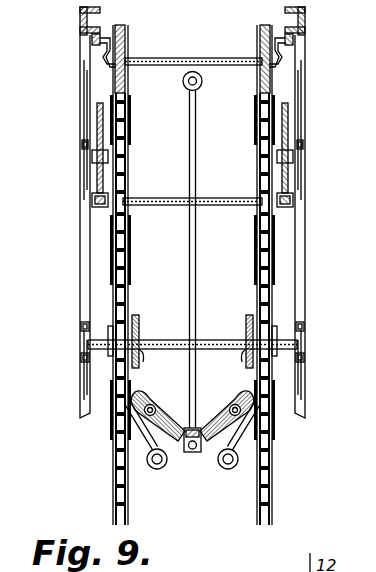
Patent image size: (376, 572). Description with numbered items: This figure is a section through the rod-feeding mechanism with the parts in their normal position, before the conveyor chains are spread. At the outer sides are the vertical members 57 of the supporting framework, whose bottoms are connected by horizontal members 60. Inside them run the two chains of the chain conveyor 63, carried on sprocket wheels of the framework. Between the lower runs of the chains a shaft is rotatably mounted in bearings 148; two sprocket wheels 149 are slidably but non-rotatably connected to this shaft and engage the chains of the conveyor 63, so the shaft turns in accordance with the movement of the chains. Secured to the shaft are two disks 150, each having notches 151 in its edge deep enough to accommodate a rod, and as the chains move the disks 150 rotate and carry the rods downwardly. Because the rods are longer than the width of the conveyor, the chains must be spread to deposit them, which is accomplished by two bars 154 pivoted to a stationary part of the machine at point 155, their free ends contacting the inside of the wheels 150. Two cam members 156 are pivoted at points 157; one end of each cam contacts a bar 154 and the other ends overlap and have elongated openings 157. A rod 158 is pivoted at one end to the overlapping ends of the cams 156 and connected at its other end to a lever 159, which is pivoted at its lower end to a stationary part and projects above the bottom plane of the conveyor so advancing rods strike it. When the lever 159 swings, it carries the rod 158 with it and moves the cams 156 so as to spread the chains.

The vertical member 57 is at (80, 32).
The horizontal member 60 is at (80, 286).
The chain conveyor 63 is at (129, 505).
The bearing 148 is at (80, 346).
The sprocket wheel 149 is at (123, 336).
The disk 150 is at (140, 326).
The notch 151 is at (143, 358).
The bar 154 is at (190, 449).
The pivot point 155 is at (150, 469).
The cam member 156 is at (142, 400).
The pivot point 157 is at (156, 410).
The rod 158 is at (189, 237).
The lever 159 is at (141, 59).